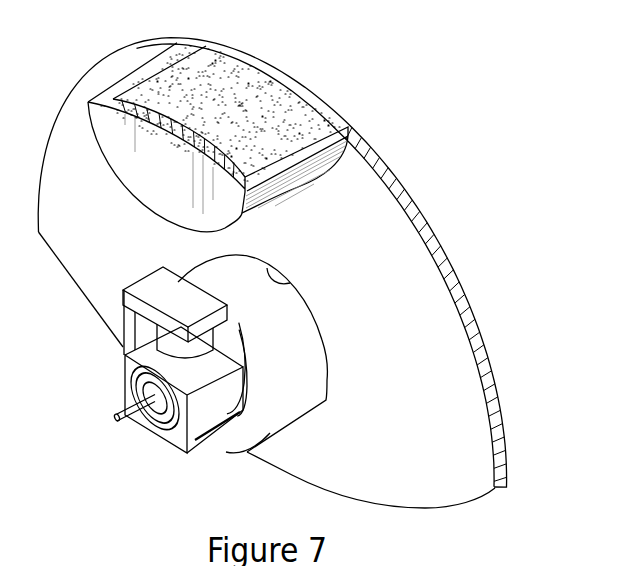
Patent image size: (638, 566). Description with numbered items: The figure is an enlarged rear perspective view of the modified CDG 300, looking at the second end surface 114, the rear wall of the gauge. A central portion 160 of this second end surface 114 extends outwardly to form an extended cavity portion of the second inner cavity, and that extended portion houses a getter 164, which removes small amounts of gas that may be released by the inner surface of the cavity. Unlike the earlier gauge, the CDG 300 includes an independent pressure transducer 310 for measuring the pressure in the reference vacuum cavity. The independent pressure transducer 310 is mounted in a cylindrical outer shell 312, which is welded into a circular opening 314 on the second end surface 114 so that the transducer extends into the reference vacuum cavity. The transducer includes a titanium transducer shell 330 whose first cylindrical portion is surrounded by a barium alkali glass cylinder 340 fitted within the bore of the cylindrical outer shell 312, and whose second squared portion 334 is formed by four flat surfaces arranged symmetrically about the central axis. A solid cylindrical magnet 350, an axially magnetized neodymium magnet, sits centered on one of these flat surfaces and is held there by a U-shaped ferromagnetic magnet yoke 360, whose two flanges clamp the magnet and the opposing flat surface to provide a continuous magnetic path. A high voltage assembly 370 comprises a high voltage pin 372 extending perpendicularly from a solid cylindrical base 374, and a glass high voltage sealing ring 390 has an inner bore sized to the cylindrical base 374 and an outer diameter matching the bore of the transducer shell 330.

The second end surface 114 is at (310, 465).
The central portion 160 is at (222, 58).
The getter 164 is at (297, 113).
The modified CDG 300 is at (504, 392).
The independent pressure transducer 310 is at (190, 469).
The cylindrical outer shell 312 is at (300, 327).
The circular opening 314 is at (290, 281).
The transducer shell 330 is at (233, 379).
The second squared portion 334 is at (226, 410).
The glass cylinder 340 is at (258, 436).
The solid cylindrical magnet 350 is at (126, 354).
The magnet yoke 360 is at (178, 282).
The high voltage assembly 370 is at (139, 392).
The high voltage pin 372 is at (112, 398).
The solid cylindrical base 374 is at (162, 417).
The high voltage sealing ring 390 is at (132, 377).